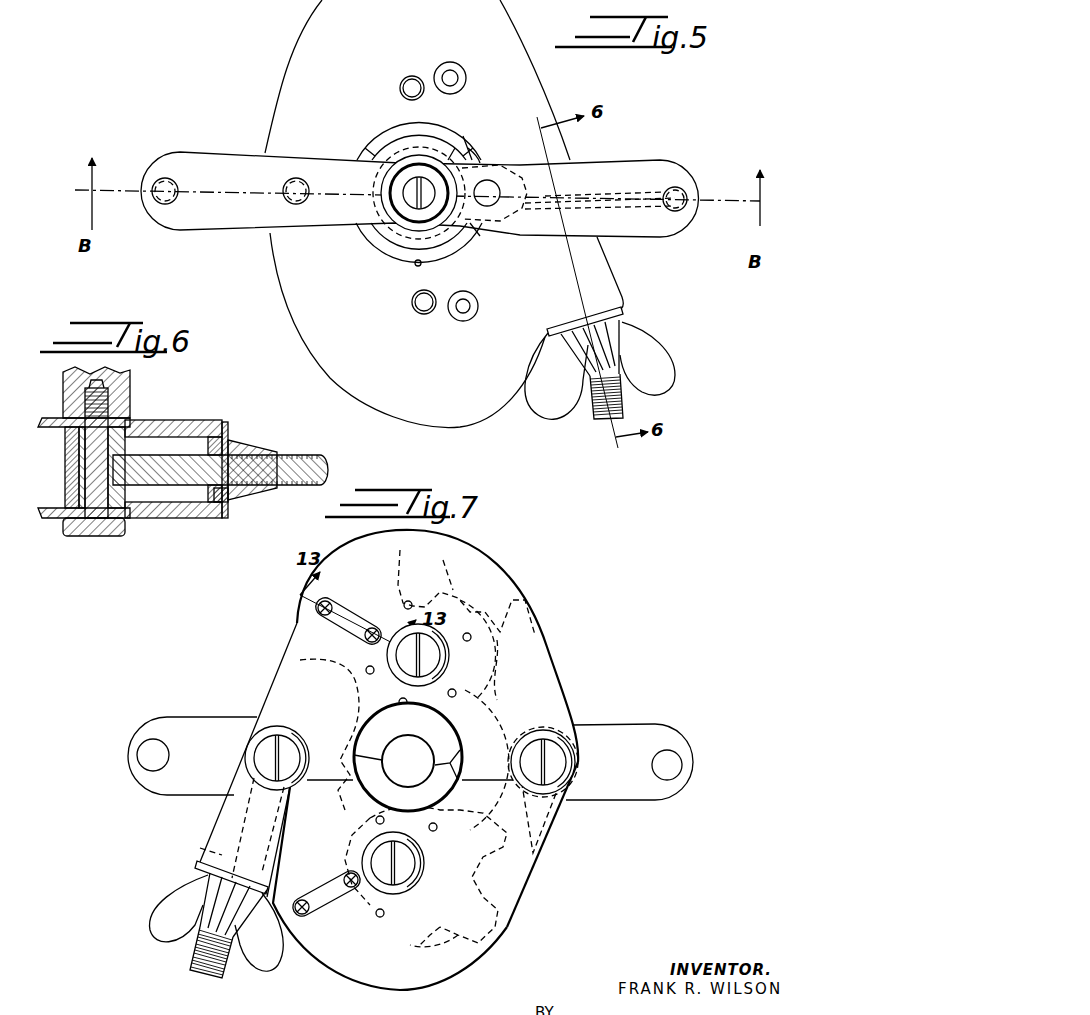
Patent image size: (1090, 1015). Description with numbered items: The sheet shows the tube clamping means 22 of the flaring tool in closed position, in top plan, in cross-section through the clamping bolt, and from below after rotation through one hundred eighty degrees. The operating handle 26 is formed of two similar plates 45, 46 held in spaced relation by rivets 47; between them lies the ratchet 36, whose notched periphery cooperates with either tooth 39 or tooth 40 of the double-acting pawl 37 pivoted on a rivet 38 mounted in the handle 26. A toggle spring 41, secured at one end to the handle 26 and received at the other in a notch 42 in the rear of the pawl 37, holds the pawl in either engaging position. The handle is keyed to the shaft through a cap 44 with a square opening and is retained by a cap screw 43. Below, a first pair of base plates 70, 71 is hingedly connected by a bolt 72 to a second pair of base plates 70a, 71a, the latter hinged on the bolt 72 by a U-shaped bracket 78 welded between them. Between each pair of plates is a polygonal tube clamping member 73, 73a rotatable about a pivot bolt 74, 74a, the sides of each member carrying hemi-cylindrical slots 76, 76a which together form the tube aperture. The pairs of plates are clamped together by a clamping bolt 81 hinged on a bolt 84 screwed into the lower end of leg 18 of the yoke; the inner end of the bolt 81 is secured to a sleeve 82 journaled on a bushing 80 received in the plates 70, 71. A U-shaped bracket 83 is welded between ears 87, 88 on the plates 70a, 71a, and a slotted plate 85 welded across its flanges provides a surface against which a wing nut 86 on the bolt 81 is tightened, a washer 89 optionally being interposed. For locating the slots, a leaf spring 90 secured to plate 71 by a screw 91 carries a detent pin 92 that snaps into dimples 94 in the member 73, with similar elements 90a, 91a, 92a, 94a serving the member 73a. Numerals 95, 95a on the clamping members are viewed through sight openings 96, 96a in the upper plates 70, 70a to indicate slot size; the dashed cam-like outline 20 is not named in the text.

In FIG. 6, the leg of the yoke 18 is at (130, 385).
In FIG. 5, the cam hub 20 is at (383, 148).
In FIG. 5, the tube clamping means 22 is at (281, 84).
In FIG. 7, the tube clamping means 22 is at (582, 700).
In FIG. 5, the handle 26 is at (640, 158).
In FIG. 7, the handle 26 is at (640, 724).
In FIG. 5, the ratchet 36 is at (437, 150).
In FIG. 5, the double-acting pawl 37 is at (514, 184).
In FIG. 5, the rivet 38 is at (490, 182).
In FIG. 5, the tooth 39 is at (476, 232).
In FIG. 5, the tooth 40 is at (475, 153).
In FIG. 5, the toggle spring 41 is at (600, 198).
In FIG. 5, the notch 42 is at (548, 203).
In FIG. 5, the cap screw 43 is at (405, 189).
In FIG. 5, the cap 44 is at (398, 197).
In FIG. 5, the plate 45 is at (227, 158).
In FIG. 7, the plate 46 is at (650, 797).
In FIG. 5, the rivets 47 is at (152, 191).
In FIG. 7, the rivets 47 is at (677, 773).
In FIG. 6, the base plate 70 is at (58, 418).
In FIG. 5, the base plate 70a is at (471, 410).
In FIG. 6, the base plate 71 is at (52, 518).
In FIG. 7, the base plate 71 is at (548, 668).
In FIG. 7, the base plate 71a is at (535, 882).
In FIG. 7, the bolt 72 is at (562, 760).
In FIG. 5, the polygonal tube clamping member 73 is at (402, 130).
In FIG. 7, the polygonal tube clamping member 73 is at (533, 631).
In FIG. 5, the polygonal tube clamping member 73a is at (398, 257).
In FIG. 7, the polygonal tube clamping member 73a is at (515, 917).
In FIG. 5, the pivot bolt 74 is at (400, 88).
In FIG. 7, the pivot bolt 74 is at (440, 660).
In FIG. 5, the pivot bolt 74a is at (412, 303).
In FIG. 7, the pivot bolt 74a is at (418, 856).
In FIG. 7, the hemi-cylindrical slots 76 is at (352, 681).
In FIG. 7, the hemi-cylindrical slots 76a is at (430, 947).
In FIG. 7, the U-shaped bracket 78 is at (548, 832).
In FIG. 6, the bushing 80 is at (80, 440).
In FIG. 5, the clamping bolt 81 is at (600, 422).
In FIG. 6, the clamping bolt 81 is at (327, 472).
In FIG. 7, the clamping bolt 81 is at (206, 970).
In FIG. 6, the sleeve 82 is at (66, 471).
In FIG. 6, the U-shaped bracket 83 is at (172, 430).
In FIG. 7, the U-shaped bracket 83 is at (288, 812).
In FIG. 6, the bolt 84 is at (104, 534).
In FIG. 7, the bolt 84 is at (262, 752).
In FIG. 6, the slotted plate 85 is at (228, 500).
In FIG. 7, the slotted plate 85 is at (200, 847).
In FIG. 5, the wing nut 86 is at (670, 363).
In FIG. 6, the wing nut 86 is at (265, 455).
In FIG. 7, the wing nut 86 is at (158, 917).
In FIG. 5, the ear 87 is at (609, 271).
In FIG. 6, the ear 87 is at (222, 428).
In FIG. 6, the ear 88 is at (218, 518).
In FIG. 7, the ear 88 is at (268, 695).
In FIG. 5, the washer 89 is at (623, 311).
In FIG. 6, the washer 89 is at (228, 438).
In FIG. 7, the washer 89 is at (200, 865).
In FIG. 7, the leaf spring 90 is at (346, 612).
In FIG. 7, the leaf spring 90a is at (328, 906).
In FIG. 7, the screw 91 is at (328, 602).
In FIG. 7, the screw 91a is at (310, 914).
In FIG. 7, the detent pin 92 is at (377, 631).
In FIG. 7, the detent pin 92a is at (343, 879).
In FIG. 7, the dimples 94 is at (450, 605).
In FIG. 7, the dimples 94a is at (385, 808).
In FIG. 5, the numerals 95 is at (459, 78).
In FIG. 5, the numerals 95a is at (472, 306).
In FIG. 5, the sight opening 96 is at (460, 63).
In FIG. 5, the sight opening 96a is at (474, 318).